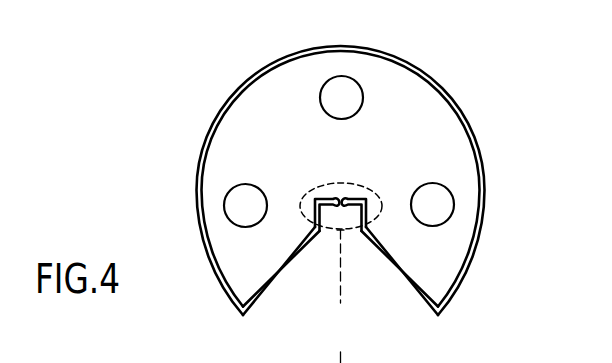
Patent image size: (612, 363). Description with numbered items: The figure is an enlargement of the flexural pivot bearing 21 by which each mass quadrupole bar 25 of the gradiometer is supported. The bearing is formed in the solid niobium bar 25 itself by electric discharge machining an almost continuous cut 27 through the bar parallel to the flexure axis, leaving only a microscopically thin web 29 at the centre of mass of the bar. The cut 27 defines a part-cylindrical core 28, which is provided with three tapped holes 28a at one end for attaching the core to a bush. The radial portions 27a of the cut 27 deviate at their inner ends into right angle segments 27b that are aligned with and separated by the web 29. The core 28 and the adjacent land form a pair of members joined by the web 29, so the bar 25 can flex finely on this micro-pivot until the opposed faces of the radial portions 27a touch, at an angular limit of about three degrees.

The flexure bearing 21 is at (217, 100).
The solid bar 25 is at (168, 205).
The cut 27 is at (464, 283).
The radial portions of the cut 27a is at (402, 281).
The right angle segments 27b is at (352, 232).
The part-cylindrical core 28 is at (423, 145).
The tapped holes 28a is at (348, 91).
The web 29 is at (344, 198).